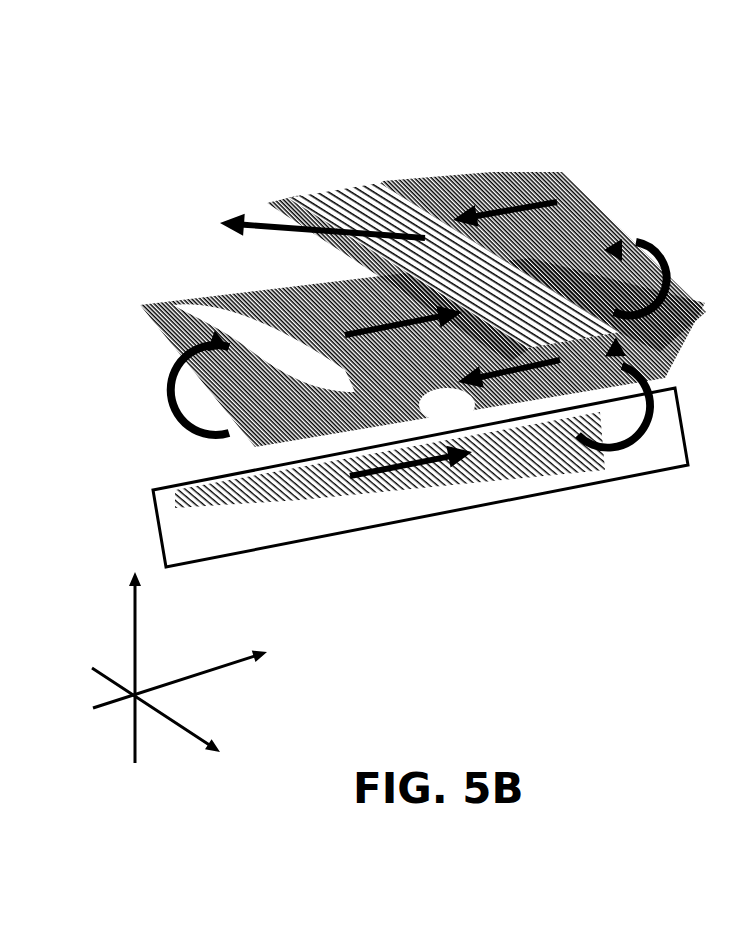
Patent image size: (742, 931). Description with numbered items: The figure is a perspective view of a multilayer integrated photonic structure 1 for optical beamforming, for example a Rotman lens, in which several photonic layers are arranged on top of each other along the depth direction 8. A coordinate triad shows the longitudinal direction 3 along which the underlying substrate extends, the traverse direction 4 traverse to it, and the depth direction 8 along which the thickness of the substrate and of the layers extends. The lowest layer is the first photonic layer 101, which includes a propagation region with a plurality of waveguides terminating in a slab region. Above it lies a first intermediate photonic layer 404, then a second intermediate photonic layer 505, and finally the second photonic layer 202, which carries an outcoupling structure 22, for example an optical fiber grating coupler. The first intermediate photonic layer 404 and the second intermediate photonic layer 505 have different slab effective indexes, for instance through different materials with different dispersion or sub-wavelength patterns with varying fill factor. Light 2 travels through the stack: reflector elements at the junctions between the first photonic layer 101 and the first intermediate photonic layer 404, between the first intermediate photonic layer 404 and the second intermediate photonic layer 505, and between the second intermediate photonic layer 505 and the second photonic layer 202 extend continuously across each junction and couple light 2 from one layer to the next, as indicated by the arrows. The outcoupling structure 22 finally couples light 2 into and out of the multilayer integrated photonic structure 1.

The multilayer integrated photonic structure 1 is at (395, 310).
The light 2 is at (227, 218).
The outcoupling structure 22 is at (370, 203).
The second photonic layer 202 is at (567, 225).
The first intermediate photonic layer 404 is at (262, 285).
The second intermediate photonic layer 505 is at (160, 375).
The first photonic layer 101 is at (165, 556).
The longitudinal direction 3 is at (226, 660).
The traverse direction 4 is at (136, 604).
The depth direction 8 is at (198, 740).